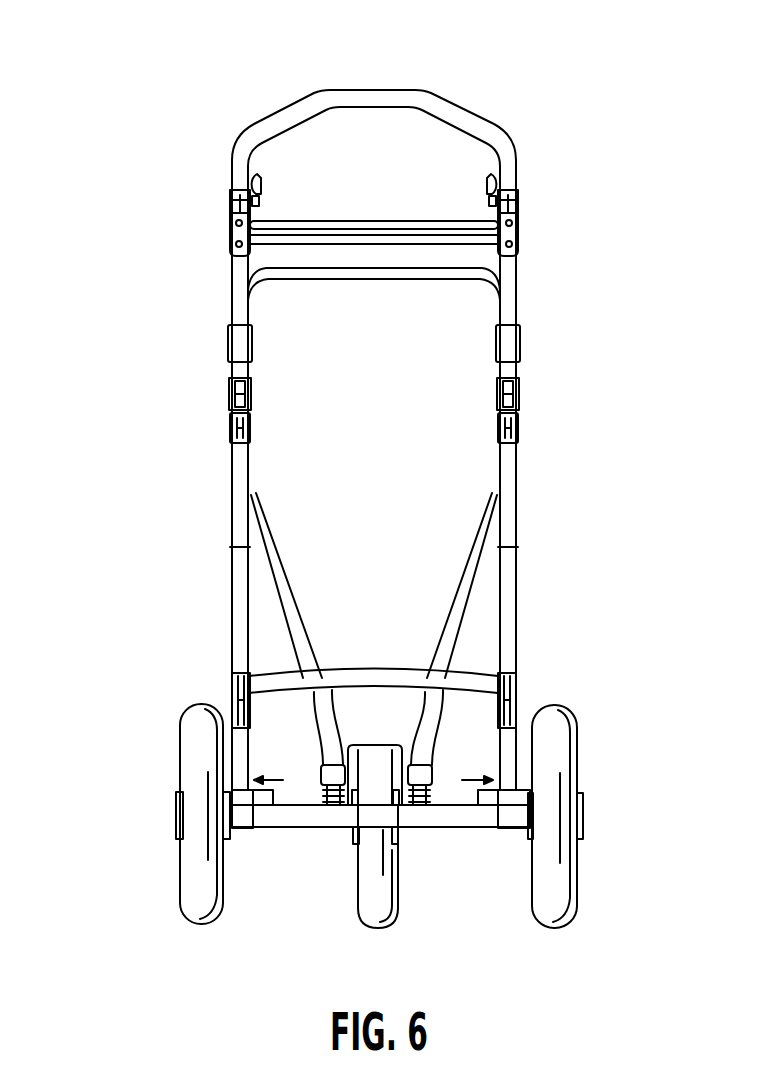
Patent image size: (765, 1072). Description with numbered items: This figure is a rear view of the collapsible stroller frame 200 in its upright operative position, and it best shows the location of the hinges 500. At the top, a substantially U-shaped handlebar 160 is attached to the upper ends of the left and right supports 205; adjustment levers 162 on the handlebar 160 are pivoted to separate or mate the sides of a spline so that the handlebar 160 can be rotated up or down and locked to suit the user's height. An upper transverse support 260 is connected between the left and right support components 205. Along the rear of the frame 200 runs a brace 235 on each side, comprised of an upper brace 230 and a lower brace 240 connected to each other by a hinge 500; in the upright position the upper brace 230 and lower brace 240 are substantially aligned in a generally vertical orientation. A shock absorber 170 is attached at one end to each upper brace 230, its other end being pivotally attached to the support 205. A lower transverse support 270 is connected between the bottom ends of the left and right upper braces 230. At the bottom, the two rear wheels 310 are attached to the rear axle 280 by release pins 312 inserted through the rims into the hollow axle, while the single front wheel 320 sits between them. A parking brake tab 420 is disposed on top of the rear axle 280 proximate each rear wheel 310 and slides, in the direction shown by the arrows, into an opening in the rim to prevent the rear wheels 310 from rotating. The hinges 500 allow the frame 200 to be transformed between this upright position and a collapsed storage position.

The handlebar 160 is at (374, 106).
The adjustment lever 162 is at (263, 179).
The shock absorber 170 is at (239, 472).
The frame 200 is at (376, 475).
The support 205 is at (465, 595).
The upper brace 230 is at (240, 586).
The brace 235 is at (214, 628).
The lower brace 240 is at (242, 742).
The upper transverse support 260 is at (338, 229).
The lower transverse support 270 is at (358, 682).
The rear axle 280 is at (462, 828).
The rear wheel 310 is at (193, 753).
The release pin 312 is at (180, 818).
The front wheel 320 is at (360, 871).
The parking brake tab 420 is at (264, 796).
The hinge 500 is at (236, 394).